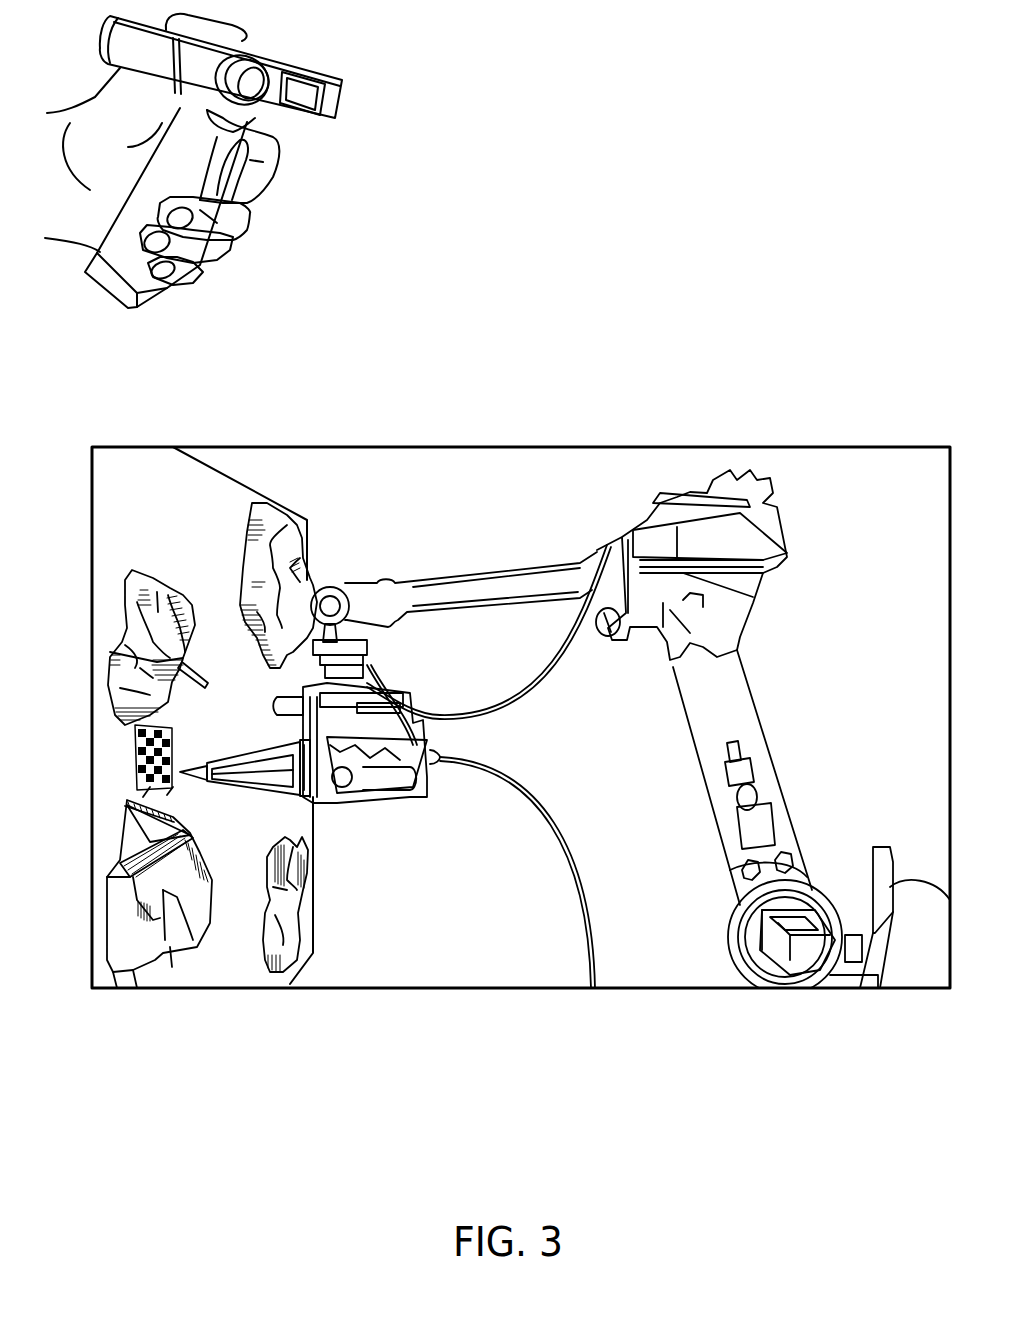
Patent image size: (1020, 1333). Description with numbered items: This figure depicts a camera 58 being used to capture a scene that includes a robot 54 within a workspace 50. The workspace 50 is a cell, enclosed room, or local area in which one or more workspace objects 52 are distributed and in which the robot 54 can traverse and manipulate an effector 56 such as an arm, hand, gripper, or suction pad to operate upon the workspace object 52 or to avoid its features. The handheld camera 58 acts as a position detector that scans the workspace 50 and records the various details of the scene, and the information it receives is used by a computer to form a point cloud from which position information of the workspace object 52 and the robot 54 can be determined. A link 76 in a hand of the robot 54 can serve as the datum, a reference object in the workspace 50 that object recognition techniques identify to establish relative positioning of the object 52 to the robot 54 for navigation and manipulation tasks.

The workspace 50 is at (380, 472).
The workspace object 52 is at (173, 585).
The robot 54 is at (500, 572).
The effector 56 is at (267, 784).
The camera 58 is at (342, 52).
The link 76 is at (288, 792).